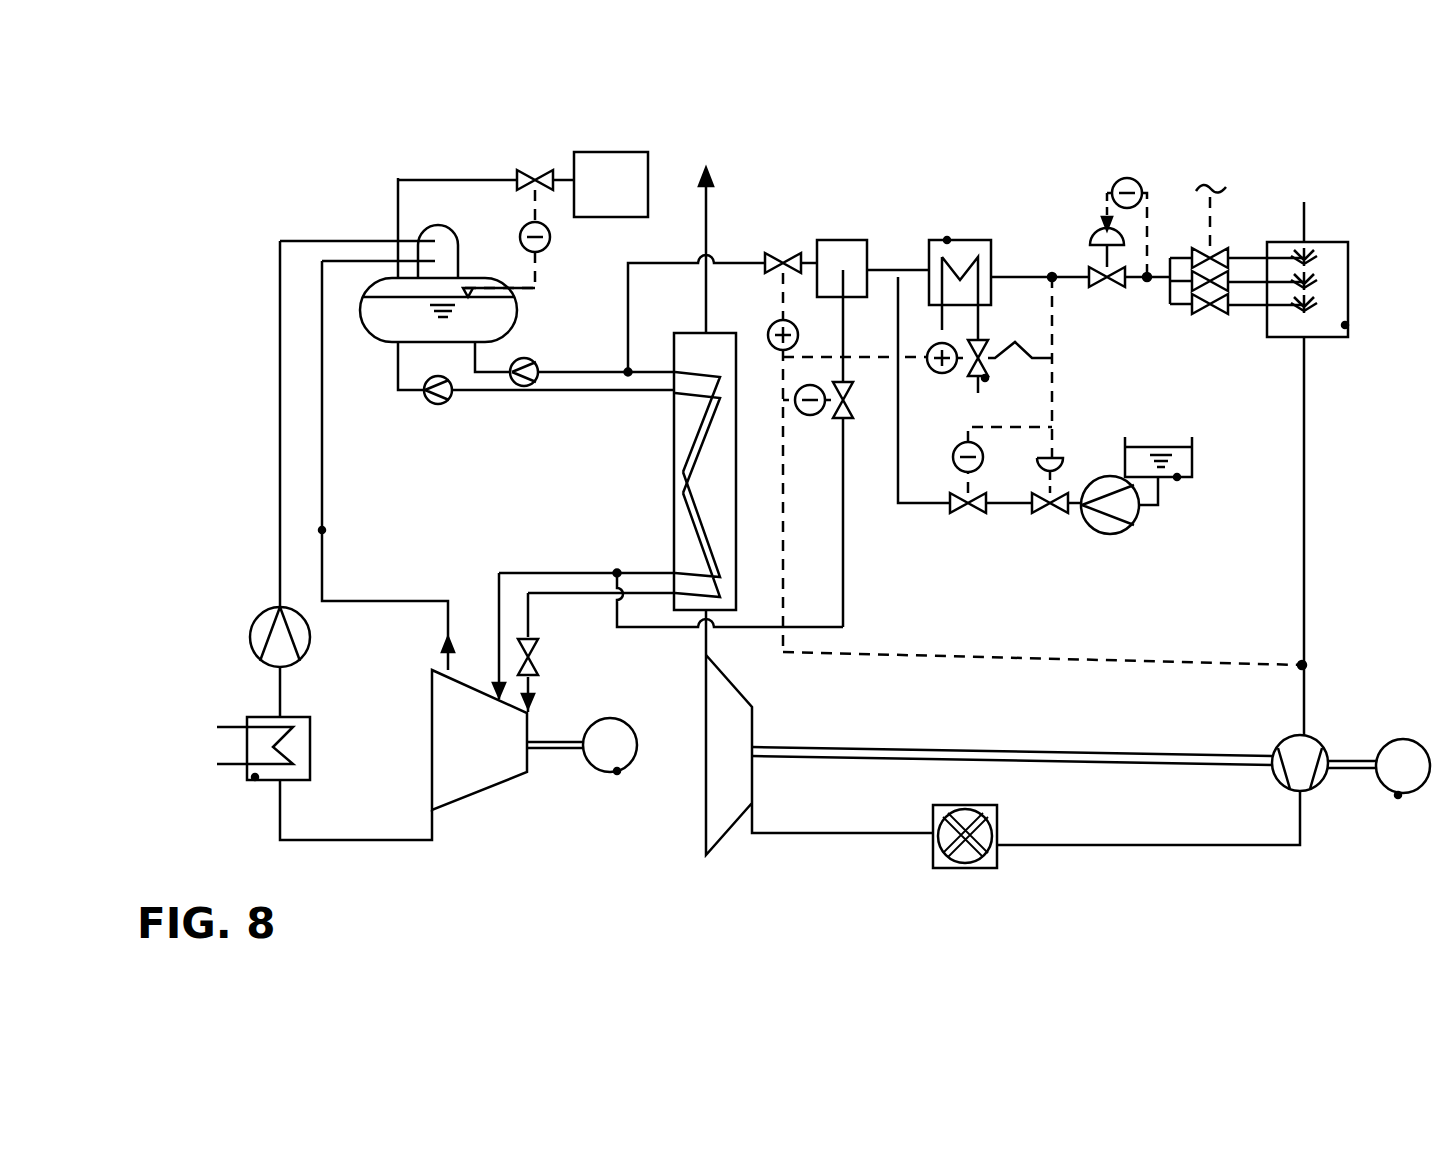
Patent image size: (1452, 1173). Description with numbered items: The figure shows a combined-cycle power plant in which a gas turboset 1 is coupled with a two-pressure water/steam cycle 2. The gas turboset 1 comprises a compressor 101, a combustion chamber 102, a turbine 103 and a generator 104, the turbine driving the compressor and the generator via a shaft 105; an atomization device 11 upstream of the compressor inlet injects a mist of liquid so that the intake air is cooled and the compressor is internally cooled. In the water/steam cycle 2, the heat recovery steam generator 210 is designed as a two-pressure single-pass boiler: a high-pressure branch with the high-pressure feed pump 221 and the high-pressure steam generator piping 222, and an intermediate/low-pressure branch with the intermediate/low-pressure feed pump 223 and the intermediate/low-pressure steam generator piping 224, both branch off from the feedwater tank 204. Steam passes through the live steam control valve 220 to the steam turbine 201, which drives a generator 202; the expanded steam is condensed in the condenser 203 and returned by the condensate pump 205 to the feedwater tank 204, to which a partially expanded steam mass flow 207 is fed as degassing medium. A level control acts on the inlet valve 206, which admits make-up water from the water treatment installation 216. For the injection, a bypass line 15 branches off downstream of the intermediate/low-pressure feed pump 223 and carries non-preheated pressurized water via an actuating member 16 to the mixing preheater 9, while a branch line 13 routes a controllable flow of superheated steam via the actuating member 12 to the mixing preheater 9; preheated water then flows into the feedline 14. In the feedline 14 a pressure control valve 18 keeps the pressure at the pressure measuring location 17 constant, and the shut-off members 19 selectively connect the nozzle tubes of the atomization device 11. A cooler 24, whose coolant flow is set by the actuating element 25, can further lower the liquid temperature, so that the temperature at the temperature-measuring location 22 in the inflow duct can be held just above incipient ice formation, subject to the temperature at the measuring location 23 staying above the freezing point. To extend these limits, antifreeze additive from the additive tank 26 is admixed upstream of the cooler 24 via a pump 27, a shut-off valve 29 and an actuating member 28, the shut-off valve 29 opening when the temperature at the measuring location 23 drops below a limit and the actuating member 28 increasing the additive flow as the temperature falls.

The gas turboset 1 is at (937, 709).
The water/steam cycle 2 is at (475, 512).
The mixing preheater 9 is at (828, 240).
The atomization device 11 is at (1345, 325).
The actuating member 12 is at (845, 420).
The branch line 13 is at (843, 615).
The feedline 14 is at (882, 270).
The bypass line 15 is at (665, 262).
The actuating member 16 is at (782, 256).
The pressure measuring location 17 is at (1147, 287).
The pressure control valve 18 is at (1090, 285).
The shut-off members 19 is at (1218, 313).
The temperature-measuring location 22 is at (1304, 666).
The measuring location 23 is at (1053, 275).
The cooler 24 is at (947, 240).
The actuating element 25 is at (985, 378).
The additive tank 26 is at (1177, 477).
The pump 27 is at (1098, 535).
The actuating member 28 is at (952, 515).
The shut-off valve 29 is at (1035, 515).
The compressor 101 is at (1310, 792).
The combustion chamber 102 is at (997, 847).
The turbine 103 is at (725, 825).
The generator 104 is at (1398, 797).
The shaft 105 is at (1015, 750).
The steam turbine 201 is at (512, 775).
The generator 202 is at (617, 772).
The condenser 203 is at (255, 777).
The feedwater tank 204 is at (367, 327).
The condensate pump 205 is at (250, 632).
The inlet valve 206 is at (533, 171).
The partially expanded steam mass flow 207 is at (324, 530).
The heat recovery steam generator 210 is at (682, 497).
The water treatment installation 216 is at (582, 203).
The live steam control valve 220 is at (530, 648).
The high-pressure feed pump 221 is at (438, 404).
The high-pressure steam generator piping 222 is at (702, 553).
The intermediate/low-pressure feed pump 223 is at (524, 386).
The intermediate/low-pressure steam generator piping 224 is at (697, 437).